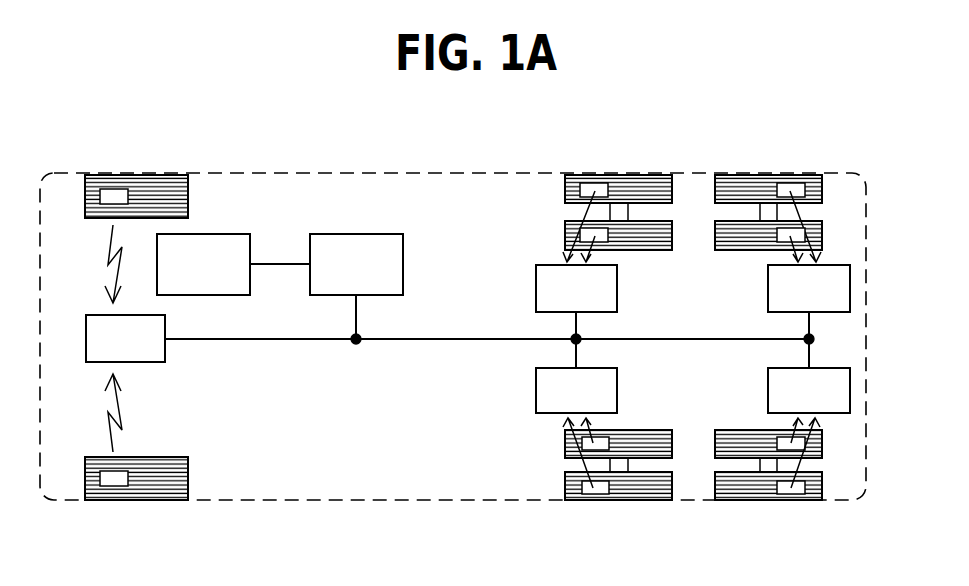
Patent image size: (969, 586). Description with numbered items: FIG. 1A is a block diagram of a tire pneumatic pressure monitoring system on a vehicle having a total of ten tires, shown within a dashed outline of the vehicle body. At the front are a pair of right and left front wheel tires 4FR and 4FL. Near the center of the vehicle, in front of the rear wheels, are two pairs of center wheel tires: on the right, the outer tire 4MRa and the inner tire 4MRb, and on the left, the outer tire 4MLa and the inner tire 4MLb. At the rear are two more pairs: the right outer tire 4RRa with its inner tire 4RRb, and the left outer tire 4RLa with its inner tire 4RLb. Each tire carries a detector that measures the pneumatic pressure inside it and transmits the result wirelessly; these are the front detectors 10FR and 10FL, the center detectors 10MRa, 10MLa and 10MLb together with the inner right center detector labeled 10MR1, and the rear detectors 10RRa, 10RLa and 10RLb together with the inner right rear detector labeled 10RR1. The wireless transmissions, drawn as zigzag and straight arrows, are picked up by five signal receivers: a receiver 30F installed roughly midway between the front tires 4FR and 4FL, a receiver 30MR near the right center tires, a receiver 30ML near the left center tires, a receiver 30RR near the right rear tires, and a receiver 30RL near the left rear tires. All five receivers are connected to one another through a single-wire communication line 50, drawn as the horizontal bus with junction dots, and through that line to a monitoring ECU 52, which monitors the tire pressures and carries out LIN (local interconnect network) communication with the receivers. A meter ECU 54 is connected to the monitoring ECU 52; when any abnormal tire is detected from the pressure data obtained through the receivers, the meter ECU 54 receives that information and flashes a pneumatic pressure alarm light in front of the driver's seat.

The right front wheel tire 4FR is at (156, 174).
The detector 10FR is at (110, 189).
The left front wheel tire 4FL is at (155, 500).
The detector 10FL is at (112, 486).
The receiver 30F is at (165, 352).
The meter ECU 54 is at (219, 234).
The monitoring ECU 52 is at (371, 234).
The communication line 50 is at (392, 342).
The receiver 30MR is at (536, 295).
The right outer center wheel tire 4MRa is at (655, 174).
The right inner center wheel tire 4MRb is at (565, 236).
The detector 10MRa is at (590, 191).
The middle right inner tire sensor 10MR1 is at (603, 238).
The receiver 30RR is at (768, 295).
The right outer rear wheel tire 4RRa is at (733, 174).
The right inner rear wheel tire 4RRb is at (822, 236).
The detector 10RRa is at (798, 190).
The rear right inner tire sensor 10RR1 is at (783, 239).
The receiver 30ML is at (536, 373).
The left outer center wheel tire 4MLa is at (655, 500).
The left inner center wheel tire 4MLb is at (565, 450).
The detector 10MLa is at (589, 490).
The detector 10MLb is at (609, 436).
The receiver 30RL is at (768, 374).
The left outer rear wheel tire 4RLa is at (732, 500).
The left inner rear wheel tire 4RLb is at (822, 438).
The detector 10RLa is at (800, 492).
The detector 10RLb is at (779, 437).